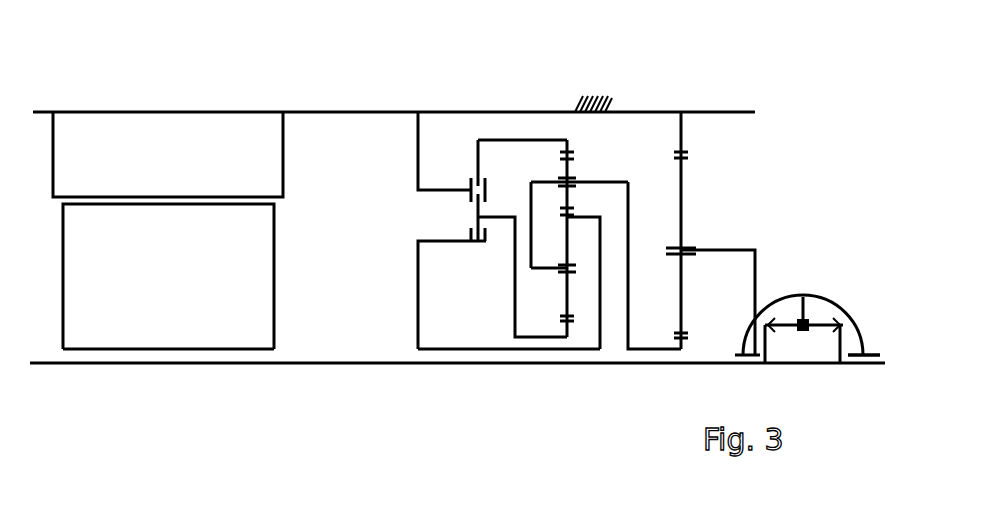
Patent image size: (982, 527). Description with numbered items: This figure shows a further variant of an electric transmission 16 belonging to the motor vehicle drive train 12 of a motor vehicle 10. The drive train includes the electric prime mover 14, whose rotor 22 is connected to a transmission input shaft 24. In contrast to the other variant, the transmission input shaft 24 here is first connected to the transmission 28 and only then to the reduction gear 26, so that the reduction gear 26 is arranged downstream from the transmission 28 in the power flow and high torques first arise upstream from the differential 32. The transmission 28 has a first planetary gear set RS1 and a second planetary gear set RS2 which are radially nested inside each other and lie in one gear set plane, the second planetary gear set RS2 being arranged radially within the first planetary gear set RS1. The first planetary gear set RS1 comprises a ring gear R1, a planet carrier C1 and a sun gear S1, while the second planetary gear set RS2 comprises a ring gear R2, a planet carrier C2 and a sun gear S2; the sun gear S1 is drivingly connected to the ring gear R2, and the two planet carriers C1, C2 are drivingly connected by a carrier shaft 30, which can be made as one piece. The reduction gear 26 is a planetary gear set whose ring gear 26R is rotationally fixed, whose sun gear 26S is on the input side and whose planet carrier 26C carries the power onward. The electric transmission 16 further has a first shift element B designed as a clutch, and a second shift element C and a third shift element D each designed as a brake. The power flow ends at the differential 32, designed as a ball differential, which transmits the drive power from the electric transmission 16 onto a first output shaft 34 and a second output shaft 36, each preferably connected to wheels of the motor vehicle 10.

The motor vehicle 10 is at (366, 4).
The motor vehicle drive train 12 is at (108, 85).
The electric prime mover 14 is at (176, 92).
The electric transmission 16 is at (78, 92).
The rotor 22 is at (153, 350).
The transmission input shaft 24 is at (340, 363).
The first output shaft 34 is at (212, 363).
The reduction gear 26 is at (684, 100).
The ring gear 26R is at (688, 152).
The planet carrier 26C is at (692, 257).
The sun gear 26S is at (686, 340).
The transmission 28 is at (557, 373).
The carrier shaft 30 is at (632, 212).
The differential 32 is at (832, 290).
The second output shaft 36 is at (848, 365).
The first shift element B is at (455, 225).
The second shift element C is at (467, 207).
The third shift element D is at (468, 175).
The ring gear R1 is at (568, 156).
The planet carrier C1 is at (590, 182).
The sun gear S1 is at (570, 215).
The ring gear R2 is at (560, 217).
The planet carrier C2 is at (555, 272).
The sun gear S2 is at (565, 324).
The first planetary gear set RS1 is at (560, 100).
The second planetary gear set RS2 is at (605, 440).